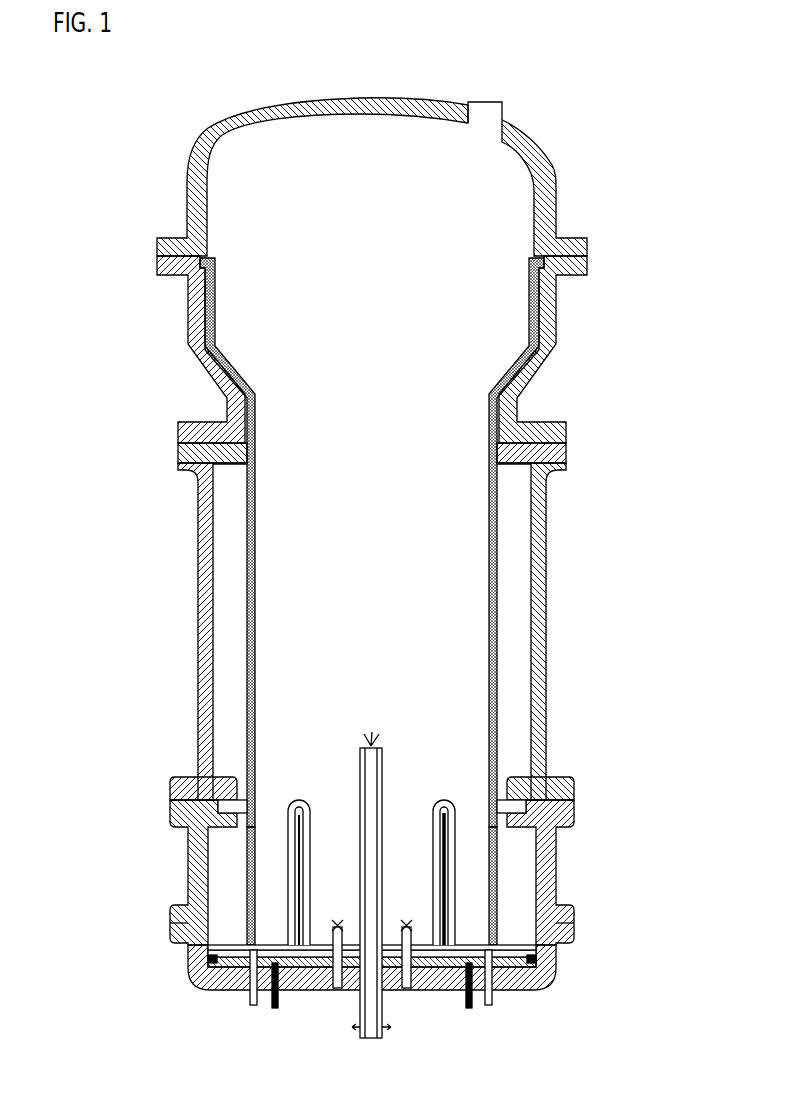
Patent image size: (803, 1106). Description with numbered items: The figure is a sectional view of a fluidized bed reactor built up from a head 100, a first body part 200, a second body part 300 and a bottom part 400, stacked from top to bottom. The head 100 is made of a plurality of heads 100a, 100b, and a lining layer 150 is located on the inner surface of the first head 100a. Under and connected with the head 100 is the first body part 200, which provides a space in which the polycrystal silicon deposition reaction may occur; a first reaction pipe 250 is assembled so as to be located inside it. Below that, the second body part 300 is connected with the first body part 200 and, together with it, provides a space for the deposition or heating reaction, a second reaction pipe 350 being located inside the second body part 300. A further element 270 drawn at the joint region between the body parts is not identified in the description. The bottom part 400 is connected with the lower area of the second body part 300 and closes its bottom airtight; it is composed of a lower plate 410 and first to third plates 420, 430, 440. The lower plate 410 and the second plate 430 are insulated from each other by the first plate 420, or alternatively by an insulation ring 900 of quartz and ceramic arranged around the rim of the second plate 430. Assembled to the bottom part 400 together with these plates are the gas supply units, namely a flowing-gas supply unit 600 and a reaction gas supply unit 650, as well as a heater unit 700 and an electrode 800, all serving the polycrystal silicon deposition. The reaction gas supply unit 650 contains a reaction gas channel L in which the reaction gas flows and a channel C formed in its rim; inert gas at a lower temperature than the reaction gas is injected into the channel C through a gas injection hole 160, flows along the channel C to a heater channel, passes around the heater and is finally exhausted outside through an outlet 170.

The head 100 is at (84, 202).
The first head 100a is at (196, 323).
The head 100b is at (188, 195).
The lining layer 150 is at (554, 306).
The first body part 200 is at (207, 647).
The first reaction pipe 250 is at (247, 563).
The flange 270 is at (227, 798).
The second body part 300 is at (188, 850).
The second reaction pipe 350 is at (243, 896).
The bottom part 400 is at (636, 918).
The lower plate 410 is at (537, 993).
The first plate 420 is at (545, 968).
The second plate 430 is at (542, 957).
The third plate 440 is at (545, 943).
The flowing-gas supply unit 600 is at (338, 990).
The reaction gas supply unit 650 is at (607, 771).
The heater unit 700 is at (447, 852).
The electrode 800 is at (275, 1008).
The insulation ring 900 is at (205, 960).
The gas injection hole 160 is at (384, 1023).
The outlet 170 is at (488, 1005).
The reaction gas channel L is at (372, 778).
The channel C is at (380, 797).